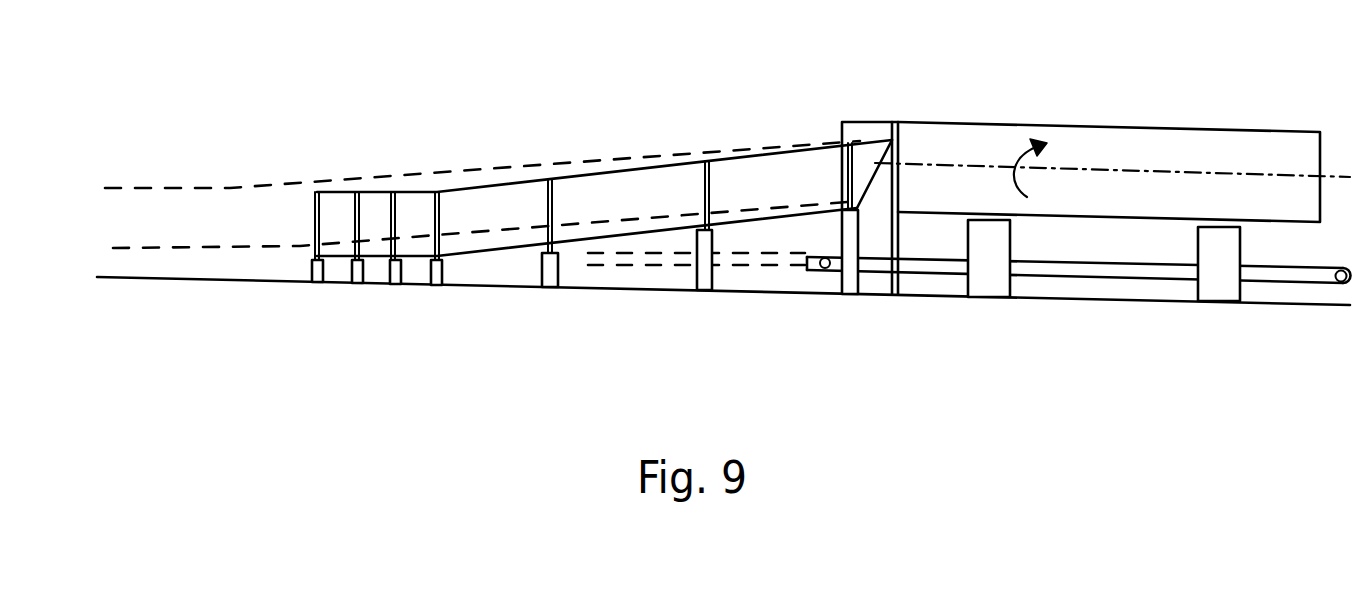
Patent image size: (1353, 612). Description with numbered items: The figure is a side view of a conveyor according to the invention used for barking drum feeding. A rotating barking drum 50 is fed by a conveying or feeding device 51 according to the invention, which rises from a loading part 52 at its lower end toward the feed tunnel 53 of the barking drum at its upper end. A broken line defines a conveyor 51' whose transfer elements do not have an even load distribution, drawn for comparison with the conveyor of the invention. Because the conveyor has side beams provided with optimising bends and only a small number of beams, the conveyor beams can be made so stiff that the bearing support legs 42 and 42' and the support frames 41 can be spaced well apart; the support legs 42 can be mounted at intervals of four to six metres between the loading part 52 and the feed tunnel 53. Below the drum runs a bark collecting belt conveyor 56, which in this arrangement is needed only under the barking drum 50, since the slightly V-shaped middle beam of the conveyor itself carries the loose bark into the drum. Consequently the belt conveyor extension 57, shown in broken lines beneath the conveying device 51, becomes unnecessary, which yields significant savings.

The support frame 41 is at (697, 160).
The bearing support leg 42 is at (528, 282).
The bearing support leg 42' is at (677, 307).
The rotating barking drum 50 is at (1101, 150).
The conveying or feeding device 51 is at (604, 155).
The conveyor 51' is at (482, 163).
The loading part 52 is at (377, 247).
The feed tunnel 53 is at (869, 130).
The bark collecting belt conveyor 56 is at (1073, 273).
The belt conveyor extension 57 is at (780, 268).